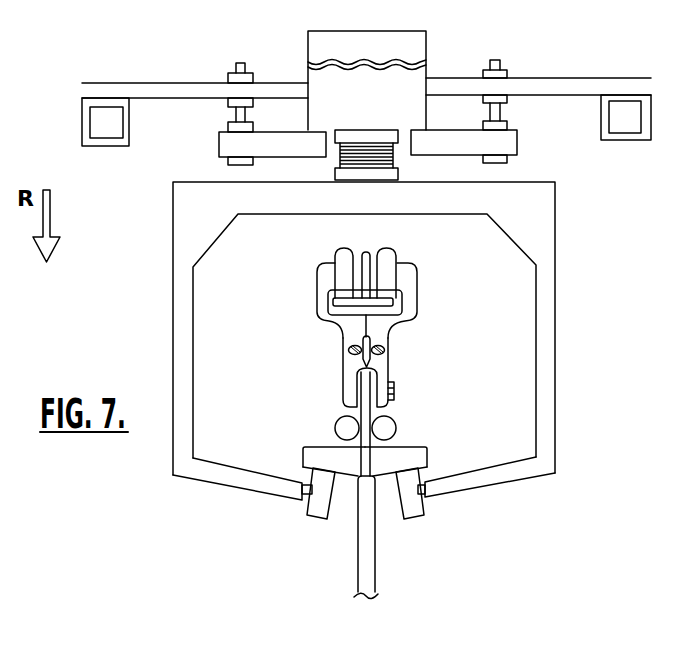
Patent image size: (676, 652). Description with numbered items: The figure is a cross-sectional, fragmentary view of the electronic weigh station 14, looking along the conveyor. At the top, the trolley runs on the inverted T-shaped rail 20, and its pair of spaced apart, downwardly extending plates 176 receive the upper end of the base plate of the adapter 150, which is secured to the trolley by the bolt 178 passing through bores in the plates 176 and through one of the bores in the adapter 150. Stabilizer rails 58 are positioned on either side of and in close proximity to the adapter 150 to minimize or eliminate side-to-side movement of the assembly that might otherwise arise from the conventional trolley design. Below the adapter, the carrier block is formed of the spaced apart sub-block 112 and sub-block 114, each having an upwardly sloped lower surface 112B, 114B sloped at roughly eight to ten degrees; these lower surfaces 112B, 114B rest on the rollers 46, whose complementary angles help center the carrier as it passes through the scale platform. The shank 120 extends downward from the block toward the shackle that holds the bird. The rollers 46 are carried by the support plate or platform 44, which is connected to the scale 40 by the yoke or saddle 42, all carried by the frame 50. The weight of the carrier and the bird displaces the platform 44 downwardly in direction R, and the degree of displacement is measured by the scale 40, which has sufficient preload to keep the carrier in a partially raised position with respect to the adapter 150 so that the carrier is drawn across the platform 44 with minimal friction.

The electronic weigh station 14 is at (292, 32).
The scale 40 is at (420, 45).
The frame 50 is at (82, 118).
The yoke or saddle 42 is at (545, 306).
The support plate or platform 44 is at (513, 489).
The inverted T-shaped rail 20 is at (367, 256).
The downwardly extending plates or tabs 176 is at (343, 366).
The adapter 150 is at (361, 405).
The bolt 178 is at (396, 392).
The stabilizer rail 58 is at (396, 428).
The sub-block 114 is at (303, 456).
The sub-block 112 is at (418, 457).
The upwardly sloped lower surface 112B is at (350, 478).
The upwardly sloped lower surface 114B is at (387, 478).
The rollers 46 is at (318, 519).
The shank 120 is at (375, 582).